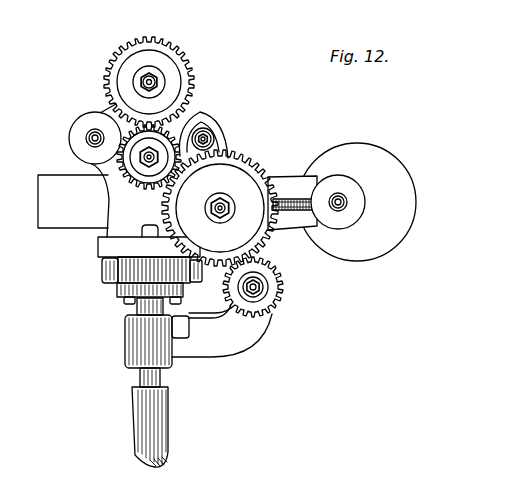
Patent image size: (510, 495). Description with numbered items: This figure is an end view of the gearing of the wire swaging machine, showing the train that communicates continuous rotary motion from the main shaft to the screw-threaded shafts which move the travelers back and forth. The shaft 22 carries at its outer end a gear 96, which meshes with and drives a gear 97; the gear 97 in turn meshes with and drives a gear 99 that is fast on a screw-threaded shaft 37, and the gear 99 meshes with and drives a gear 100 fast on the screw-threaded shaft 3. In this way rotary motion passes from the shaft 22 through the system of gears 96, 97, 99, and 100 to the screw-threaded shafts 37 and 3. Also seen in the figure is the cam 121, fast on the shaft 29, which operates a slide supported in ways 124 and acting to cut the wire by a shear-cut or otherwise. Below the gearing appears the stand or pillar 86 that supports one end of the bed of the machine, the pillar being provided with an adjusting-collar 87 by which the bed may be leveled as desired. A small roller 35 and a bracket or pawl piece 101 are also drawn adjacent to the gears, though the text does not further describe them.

The screw-threaded shaft 3 is at (165, 82).
The shaft 22 is at (263, 283).
The shaft 29 is at (350, 202).
The roller wheel 35 is at (86, 137).
The screw-threaded shaft 37 is at (157, 153).
The stand or pillar 86 is at (170, 423).
The adjusting-collar 87 is at (130, 289).
The gear 96 is at (283, 293).
The gear 97 is at (258, 162).
The gear 99 is at (138, 188).
The gear 100 is at (167, 45).
The pawl bracket 101 is at (213, 136).
The cam 121 is at (407, 184).
The ways 124 is at (54, 221).